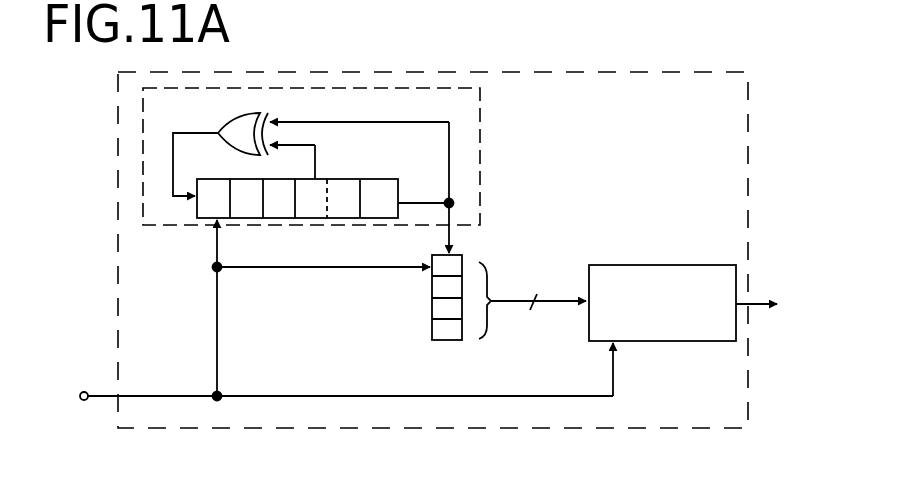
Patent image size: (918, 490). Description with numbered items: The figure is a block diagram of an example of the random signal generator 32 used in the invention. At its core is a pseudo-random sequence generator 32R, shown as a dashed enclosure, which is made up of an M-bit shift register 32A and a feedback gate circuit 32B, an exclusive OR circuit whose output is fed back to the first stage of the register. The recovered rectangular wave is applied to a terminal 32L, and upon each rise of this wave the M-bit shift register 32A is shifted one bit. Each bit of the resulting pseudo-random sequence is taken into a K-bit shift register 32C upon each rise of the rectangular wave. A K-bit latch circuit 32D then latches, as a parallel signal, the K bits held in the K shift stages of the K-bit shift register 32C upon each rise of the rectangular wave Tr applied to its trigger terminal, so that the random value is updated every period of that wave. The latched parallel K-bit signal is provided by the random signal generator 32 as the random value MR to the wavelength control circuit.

The random signal generator 32 is at (562, 430).
The pseudo-random sequence generator 32R is at (481, 168).
The feedback gate circuit 32B is at (240, 114).
The M-bit shift register 32A is at (339, 178).
The K-bit shift register 32C is at (432, 297).
The K-bit latch circuit 32D is at (615, 265).
The terminal 32L is at (84, 402).